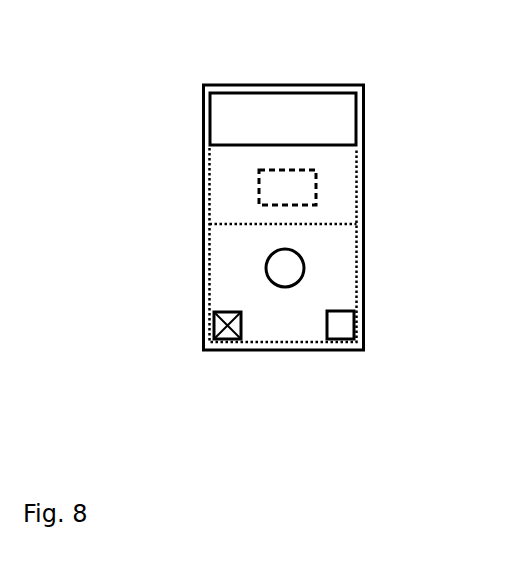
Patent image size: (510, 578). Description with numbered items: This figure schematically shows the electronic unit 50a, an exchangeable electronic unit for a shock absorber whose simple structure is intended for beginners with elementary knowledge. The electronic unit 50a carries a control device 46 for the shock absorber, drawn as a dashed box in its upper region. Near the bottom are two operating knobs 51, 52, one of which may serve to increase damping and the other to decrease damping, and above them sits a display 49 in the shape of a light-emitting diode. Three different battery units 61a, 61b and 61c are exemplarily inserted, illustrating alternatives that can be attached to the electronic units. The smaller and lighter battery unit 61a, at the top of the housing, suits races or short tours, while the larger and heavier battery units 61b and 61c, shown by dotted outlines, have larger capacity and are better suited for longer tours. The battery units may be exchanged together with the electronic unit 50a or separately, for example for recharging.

The electronic unit 50a is at (174, 80).
The battery unit 61a is at (223, 125).
The battery unit 61b is at (208, 180).
The battery unit 61c is at (207, 235).
The control device 46 is at (322, 171).
The display 49 is at (277, 269).
The operating knob 51 is at (340, 330).
The operating knob 52 is at (218, 336).